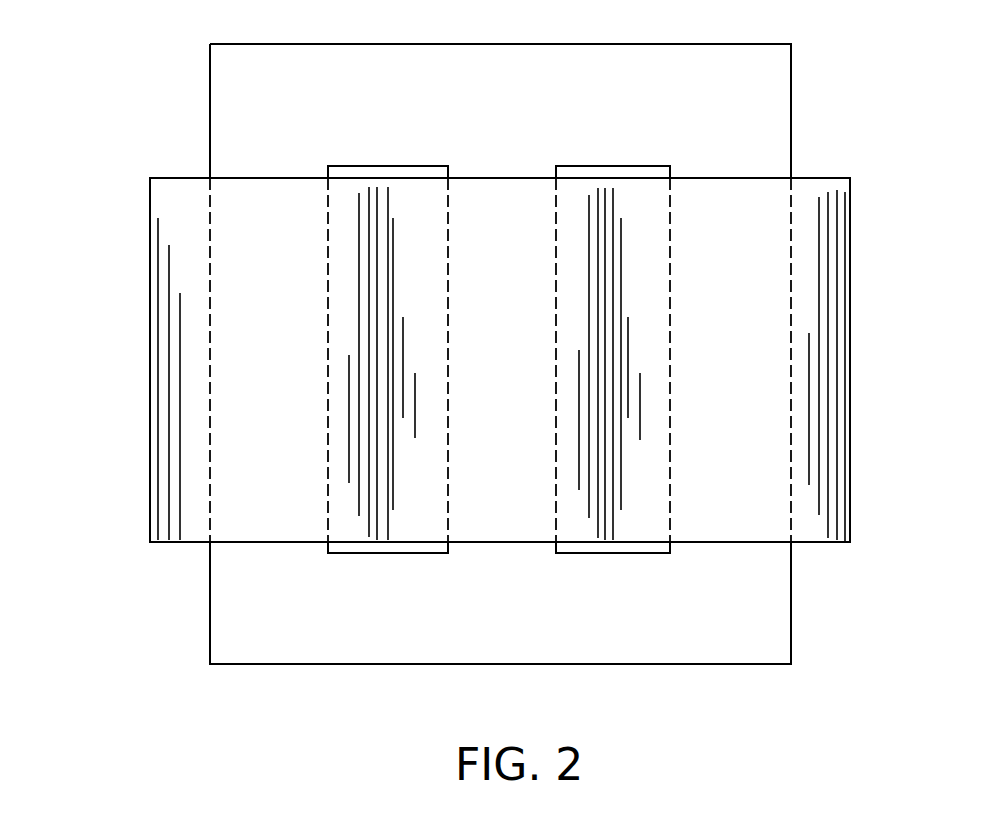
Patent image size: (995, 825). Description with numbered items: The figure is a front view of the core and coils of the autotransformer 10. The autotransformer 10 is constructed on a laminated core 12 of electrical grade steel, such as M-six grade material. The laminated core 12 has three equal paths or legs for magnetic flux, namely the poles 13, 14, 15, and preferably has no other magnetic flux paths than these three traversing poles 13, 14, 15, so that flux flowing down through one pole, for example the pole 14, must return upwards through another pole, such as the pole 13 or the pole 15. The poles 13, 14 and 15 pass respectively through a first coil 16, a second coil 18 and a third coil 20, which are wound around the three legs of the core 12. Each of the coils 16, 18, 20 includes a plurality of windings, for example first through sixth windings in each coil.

The autotransformer 10 is at (118, 383).
The laminated core 12 is at (623, 50).
The pole 13 is at (241, 543).
The pole 14 is at (502, 545).
The pole 15 is at (737, 543).
The first coil 16 is at (162, 233).
The second coil 18 is at (500, 180).
The third coil 20 is at (842, 237).